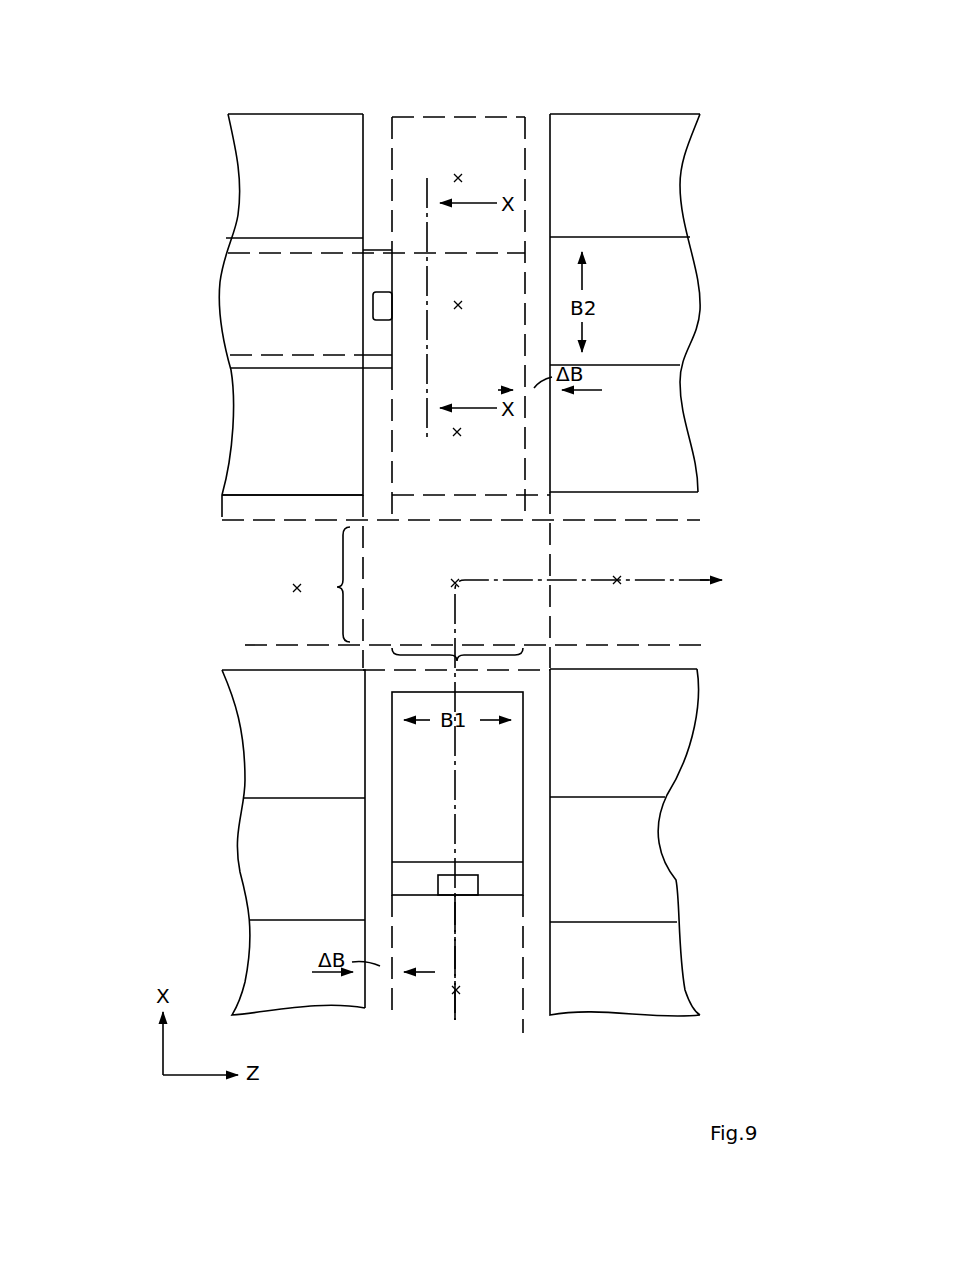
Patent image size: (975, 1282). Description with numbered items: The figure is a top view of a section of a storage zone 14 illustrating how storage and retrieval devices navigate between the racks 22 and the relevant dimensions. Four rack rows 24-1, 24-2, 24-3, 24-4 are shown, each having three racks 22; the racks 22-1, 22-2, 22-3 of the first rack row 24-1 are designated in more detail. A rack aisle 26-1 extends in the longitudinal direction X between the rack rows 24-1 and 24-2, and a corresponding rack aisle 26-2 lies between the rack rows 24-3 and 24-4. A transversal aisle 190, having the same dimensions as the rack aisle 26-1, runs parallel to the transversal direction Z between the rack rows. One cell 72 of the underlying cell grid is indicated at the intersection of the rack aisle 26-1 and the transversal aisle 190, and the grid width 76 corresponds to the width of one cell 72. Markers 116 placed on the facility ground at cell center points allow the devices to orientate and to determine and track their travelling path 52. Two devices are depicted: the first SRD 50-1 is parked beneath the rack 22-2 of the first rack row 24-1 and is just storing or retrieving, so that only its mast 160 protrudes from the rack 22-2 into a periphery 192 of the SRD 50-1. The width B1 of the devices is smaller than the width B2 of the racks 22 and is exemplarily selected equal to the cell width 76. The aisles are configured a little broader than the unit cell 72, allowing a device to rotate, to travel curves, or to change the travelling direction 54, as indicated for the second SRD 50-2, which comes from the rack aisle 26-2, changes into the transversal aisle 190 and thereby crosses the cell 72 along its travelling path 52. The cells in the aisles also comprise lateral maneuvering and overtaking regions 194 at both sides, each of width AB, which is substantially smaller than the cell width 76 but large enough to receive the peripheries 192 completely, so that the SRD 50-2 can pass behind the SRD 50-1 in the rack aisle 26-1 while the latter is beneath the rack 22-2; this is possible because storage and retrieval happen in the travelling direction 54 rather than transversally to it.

The storage zone 14 is at (185, 148).
The first rack row 24-1 is at (295, 108).
The second rack row 24-2 is at (636, 107).
The third rack row 24-3 is at (297, 1037).
The fourth rack row 24-4 is at (618, 1035).
The rack aisle 26-1 is at (457, 105).
The rack aisle 26-2 is at (453, 1089).
The rack 22-1 is at (238, 192).
The rack 22-2 is at (220, 305).
The rack 22-3 is at (230, 432).
The rack 22 is at (700, 300).
The first SRD 50-1 is at (310, 238).
The second SRD 50-2 is at (530, 759).
The travelling path 52 is at (458, 940).
The travelling direction 54 is at (690, 580).
The cell 72 is at (418, 374).
The grid width 76 is at (419, 606).
The marker 116 is at (456, 176).
The mast 160 is at (373, 305).
The transversal aisle 190 is at (195, 582).
The periphery 192 is at (381, 277).
The lateral maneuvering and overtaking region 194 is at (707, 494).